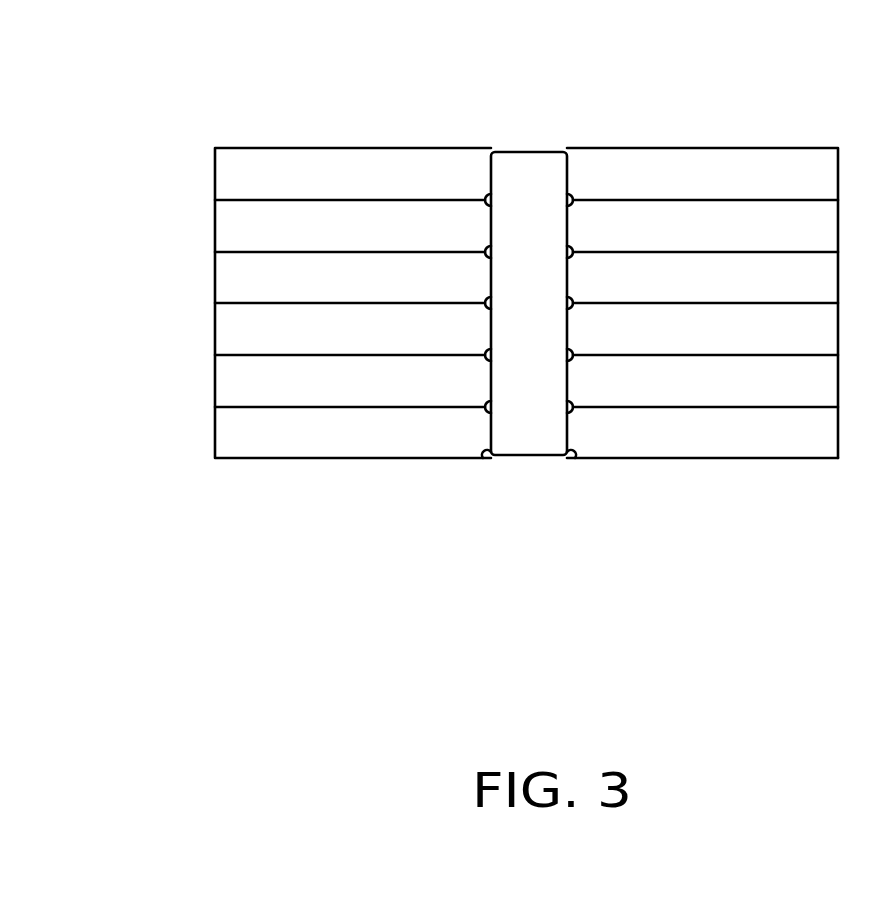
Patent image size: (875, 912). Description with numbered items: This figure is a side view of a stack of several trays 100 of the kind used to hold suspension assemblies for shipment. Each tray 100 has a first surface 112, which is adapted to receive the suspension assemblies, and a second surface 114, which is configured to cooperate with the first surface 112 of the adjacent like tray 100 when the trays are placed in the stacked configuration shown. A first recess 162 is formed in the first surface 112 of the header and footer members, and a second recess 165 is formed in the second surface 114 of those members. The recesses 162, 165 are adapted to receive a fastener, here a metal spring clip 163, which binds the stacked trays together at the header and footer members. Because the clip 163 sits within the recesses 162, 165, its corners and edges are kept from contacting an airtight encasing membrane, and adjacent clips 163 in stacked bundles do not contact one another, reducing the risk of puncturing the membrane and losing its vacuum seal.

The tray 100 is at (230, 178).
The first surface 112 is at (740, 147).
The second surface 114 is at (752, 458).
The first recess 162 is at (485, 153).
The metal spring clip 163 is at (537, 158).
The second recess 165 is at (567, 455).